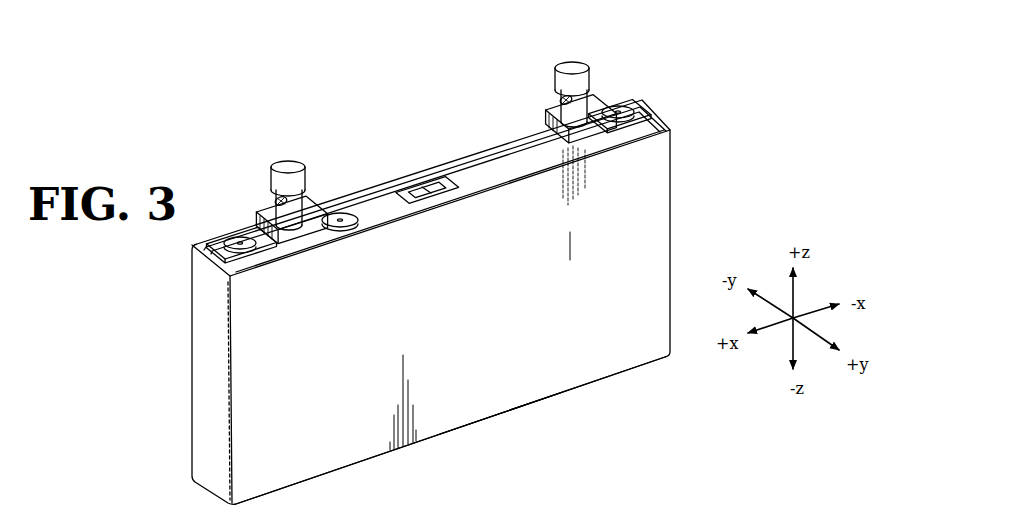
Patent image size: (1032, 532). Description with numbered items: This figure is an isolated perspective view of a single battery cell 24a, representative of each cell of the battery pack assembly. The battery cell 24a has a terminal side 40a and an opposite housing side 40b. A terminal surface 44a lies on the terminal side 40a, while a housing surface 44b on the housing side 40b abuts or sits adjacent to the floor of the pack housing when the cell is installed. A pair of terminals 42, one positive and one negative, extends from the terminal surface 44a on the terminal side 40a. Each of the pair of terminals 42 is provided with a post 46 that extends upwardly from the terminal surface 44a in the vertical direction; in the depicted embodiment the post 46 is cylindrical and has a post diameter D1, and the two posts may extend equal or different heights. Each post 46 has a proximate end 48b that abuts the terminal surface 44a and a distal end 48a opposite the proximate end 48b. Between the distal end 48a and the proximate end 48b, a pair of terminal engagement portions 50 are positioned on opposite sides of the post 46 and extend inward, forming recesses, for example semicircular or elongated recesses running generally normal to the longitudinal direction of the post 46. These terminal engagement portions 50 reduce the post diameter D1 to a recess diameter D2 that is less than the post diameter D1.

The battery cell 24a is at (403, 105).
The terminal side 40a is at (668, 105).
The housing side 40b is at (625, 388).
The pair of terminals 42 is at (458, 166).
The terminal surface 44a is at (485, 170).
The housing surface 44b is at (528, 407).
The post 46 is at (289, 216).
The distal end 48a is at (289, 165).
The proximate end 48b is at (300, 208).
The pair of terminal engagement portions 50 is at (306, 197).
The post diameter D1 is at (240, 190).
The recess diameter D2 is at (305, 190).